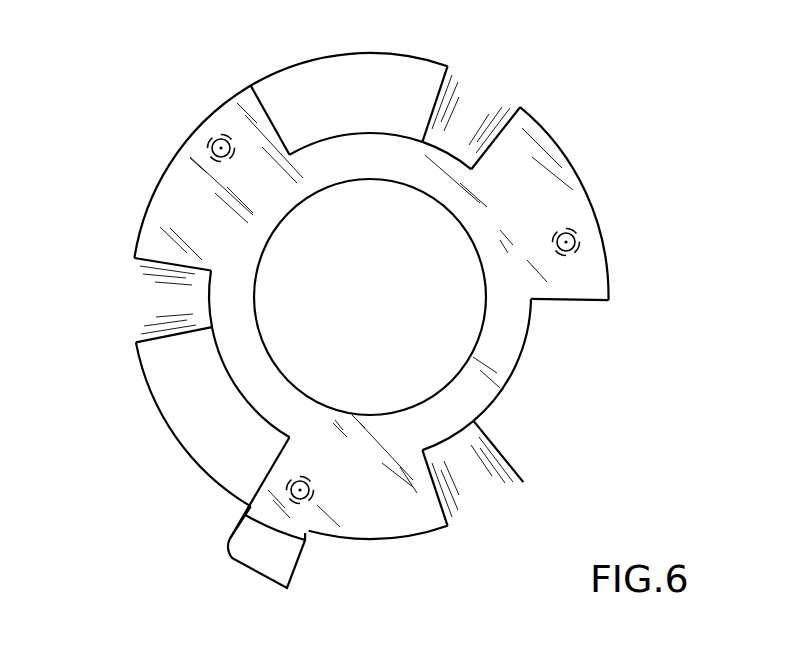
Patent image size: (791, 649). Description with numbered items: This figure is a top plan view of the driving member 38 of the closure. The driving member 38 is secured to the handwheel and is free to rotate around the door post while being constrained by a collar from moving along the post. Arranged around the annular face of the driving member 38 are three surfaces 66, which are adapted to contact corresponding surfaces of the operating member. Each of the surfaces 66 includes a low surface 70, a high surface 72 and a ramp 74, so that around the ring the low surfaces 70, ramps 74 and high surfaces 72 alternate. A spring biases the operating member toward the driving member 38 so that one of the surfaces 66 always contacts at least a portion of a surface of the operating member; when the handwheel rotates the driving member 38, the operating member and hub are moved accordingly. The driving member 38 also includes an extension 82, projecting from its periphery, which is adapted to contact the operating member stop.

The driving member 38 is at (612, 285).
The surfaces 66 is at (386, 48).
The low surfaces 70 is at (271, 88).
The high surfaces 72 is at (548, 188).
The ramps 74 is at (463, 97).
The extension 82 is at (253, 563).